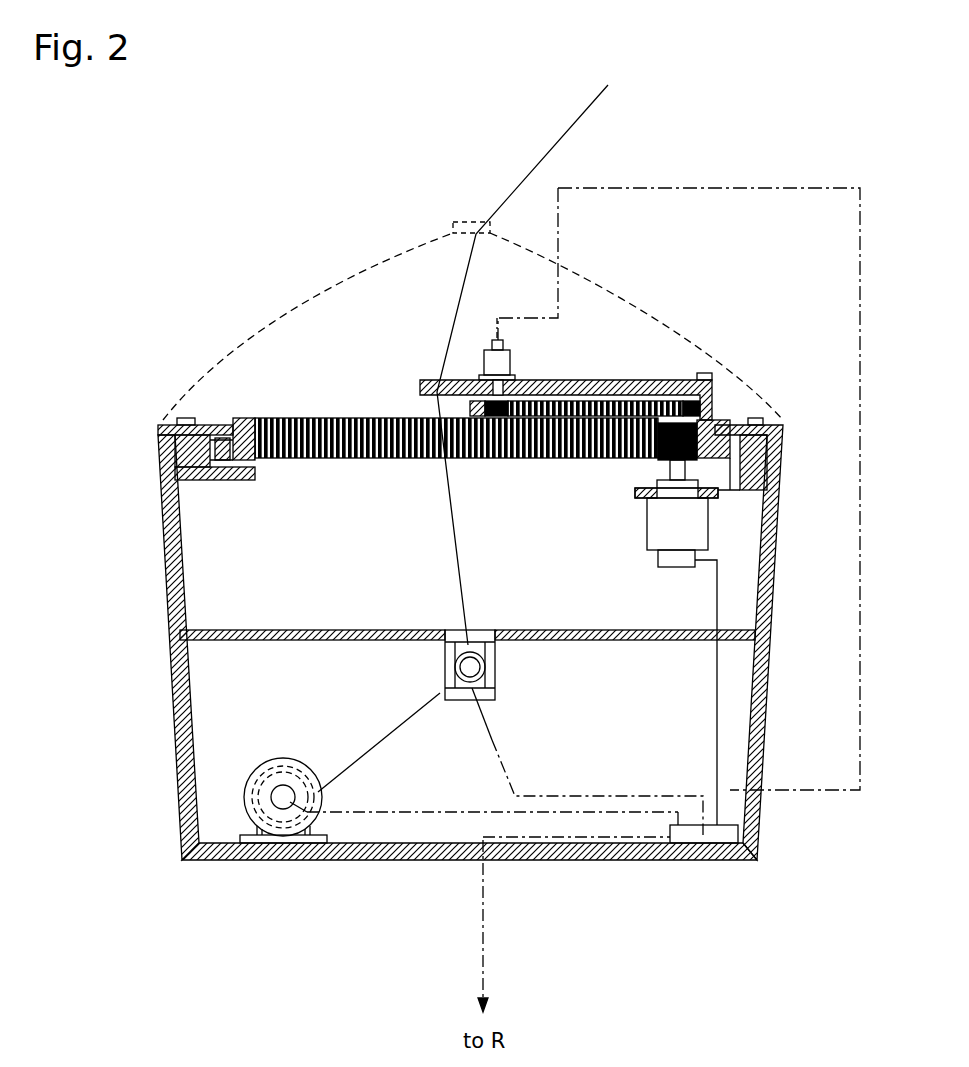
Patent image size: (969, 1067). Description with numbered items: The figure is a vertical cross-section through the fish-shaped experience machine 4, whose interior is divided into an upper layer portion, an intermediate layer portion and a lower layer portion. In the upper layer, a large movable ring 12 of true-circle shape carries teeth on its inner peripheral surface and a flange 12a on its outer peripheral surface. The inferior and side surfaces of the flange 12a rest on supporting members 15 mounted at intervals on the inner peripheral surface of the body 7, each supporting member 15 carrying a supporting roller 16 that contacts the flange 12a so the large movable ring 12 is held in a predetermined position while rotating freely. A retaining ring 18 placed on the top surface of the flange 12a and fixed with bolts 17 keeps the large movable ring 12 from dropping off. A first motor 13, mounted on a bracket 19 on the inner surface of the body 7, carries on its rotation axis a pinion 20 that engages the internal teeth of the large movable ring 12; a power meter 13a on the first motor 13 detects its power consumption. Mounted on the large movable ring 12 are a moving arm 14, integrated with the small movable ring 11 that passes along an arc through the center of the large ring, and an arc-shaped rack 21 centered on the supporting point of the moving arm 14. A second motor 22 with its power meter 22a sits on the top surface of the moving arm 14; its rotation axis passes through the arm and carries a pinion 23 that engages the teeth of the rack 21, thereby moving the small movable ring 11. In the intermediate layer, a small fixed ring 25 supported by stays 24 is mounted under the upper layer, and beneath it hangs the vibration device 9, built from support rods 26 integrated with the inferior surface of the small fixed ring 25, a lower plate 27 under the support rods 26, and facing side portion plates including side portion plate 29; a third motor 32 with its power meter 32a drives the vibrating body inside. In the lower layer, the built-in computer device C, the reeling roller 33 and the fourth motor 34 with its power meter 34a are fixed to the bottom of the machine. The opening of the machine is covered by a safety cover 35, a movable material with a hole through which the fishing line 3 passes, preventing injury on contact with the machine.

The fishing line 3 is at (377, 740).
The fish-shaped experience machine 4 is at (620, 878).
The body 7 is at (745, 860).
The vibration device 9 is at (498, 668).
The small movable ring 11 is at (437, 378).
The large movable ring 12 is at (243, 418).
The flange 12a is at (738, 432).
The first motor 13 is at (657, 530).
The power meter 13a is at (679, 567).
The moving arm 14 is at (418, 388).
The supporting members 15 is at (203, 480).
The supporting roller 16 is at (160, 478).
The bolts 17 is at (187, 417).
The retaining ring 18 is at (163, 423).
The bracket 19 is at (727, 498).
The pinion 20 is at (655, 437).
The rack 21 is at (648, 397).
The second motor 22 is at (515, 352).
The power meter 22a is at (487, 340).
The pinion 23 is at (503, 416).
The stays 24 is at (247, 640).
The small fixed ring 25 is at (458, 630).
The support rods 26 is at (445, 660).
The lower plate 27 is at (480, 688).
The side portion plate 29 is at (460, 688).
The third motor 32 is at (445, 677).
The power meter 32a is at (468, 700).
The reeling roller 33 is at (248, 790).
The fourth motor 34 is at (247, 802).
The power meter 34a is at (283, 803).
The safety cover 35 is at (385, 245).
The built-in computer device C is at (692, 843).